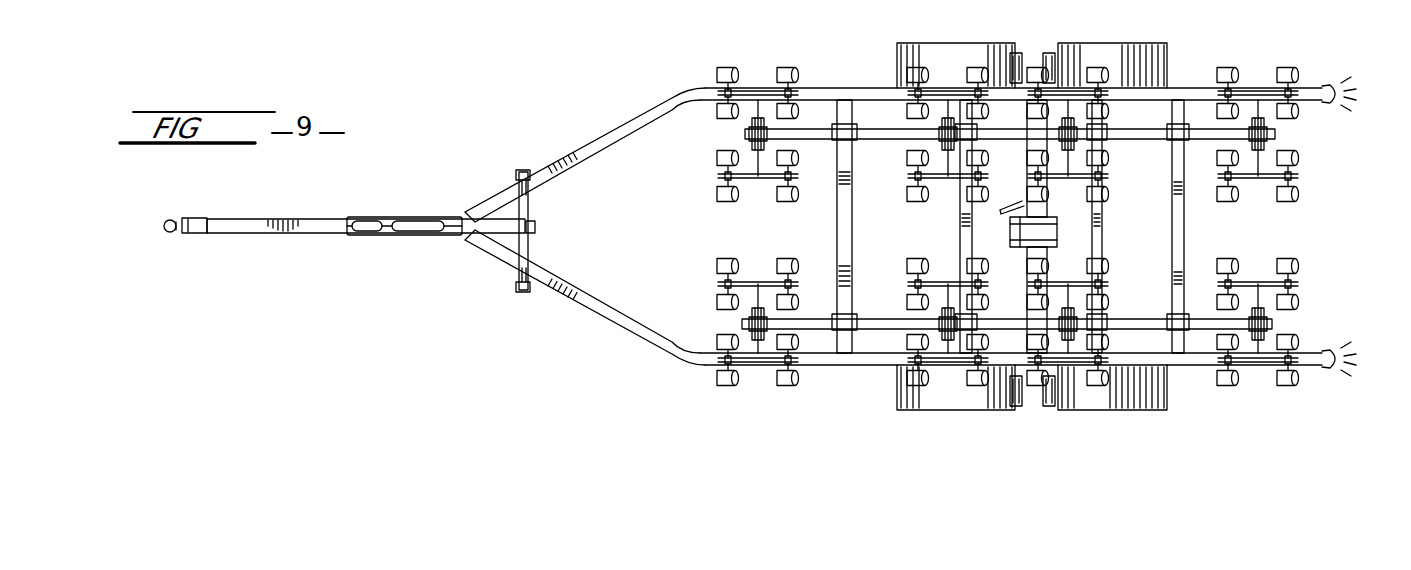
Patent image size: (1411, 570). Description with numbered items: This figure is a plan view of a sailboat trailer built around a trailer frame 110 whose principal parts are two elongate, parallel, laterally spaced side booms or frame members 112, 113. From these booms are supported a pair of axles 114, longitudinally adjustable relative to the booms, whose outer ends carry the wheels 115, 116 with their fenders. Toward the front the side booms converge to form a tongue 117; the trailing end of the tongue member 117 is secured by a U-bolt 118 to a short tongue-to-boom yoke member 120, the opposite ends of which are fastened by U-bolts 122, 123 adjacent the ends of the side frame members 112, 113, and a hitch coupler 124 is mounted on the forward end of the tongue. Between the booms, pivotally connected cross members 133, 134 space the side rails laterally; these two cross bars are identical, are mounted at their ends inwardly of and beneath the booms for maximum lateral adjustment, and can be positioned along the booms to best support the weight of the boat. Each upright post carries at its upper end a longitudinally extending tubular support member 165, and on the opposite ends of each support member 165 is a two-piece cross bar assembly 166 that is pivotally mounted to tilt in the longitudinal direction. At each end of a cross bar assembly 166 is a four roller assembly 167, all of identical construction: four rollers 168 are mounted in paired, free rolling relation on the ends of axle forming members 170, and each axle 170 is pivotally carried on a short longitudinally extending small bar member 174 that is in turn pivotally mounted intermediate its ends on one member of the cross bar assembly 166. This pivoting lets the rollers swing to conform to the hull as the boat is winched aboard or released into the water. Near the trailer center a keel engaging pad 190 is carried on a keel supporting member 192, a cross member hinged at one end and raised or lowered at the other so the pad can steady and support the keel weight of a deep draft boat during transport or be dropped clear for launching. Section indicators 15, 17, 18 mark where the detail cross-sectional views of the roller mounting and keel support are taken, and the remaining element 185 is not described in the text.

The trailer frame 110 is at (652, 98).
The side boom or frame member 112 is at (824, 366).
The side boom or frame member 113 is at (812, 91).
The axle 114 is at (960, 226).
The wheel 115 is at (1093, 402).
The wheel 116 is at (1052, 33).
The tongue member 117 is at (322, 236).
The U-bolt 118 is at (535, 224).
The tongue-to-boom yoke member 120 is at (531, 241).
The U-bolt 122 is at (530, 268).
The U-bolt 123 is at (530, 184).
The hitch coupler 124 is at (184, 238).
The cross member 133 is at (837, 246).
The cross member 134 is at (1172, 218).
The support member 165 is at (888, 140).
The two-piece cross bar assembly 166 is at (740, 322).
The four roller assembly 167 is at (825, 37).
The roller 168 is at (1300, 198).
The axle forming member 170 is at (1295, 292).
The small bar member 174 is at (1256, 282).
The lower hitch bar 185 is at (1028, 328).
The keel engaging pad 190 is at (1050, 233).
The keel supporting member 192 is at (1033, 203).
The section line 15- 15 is at (1335, 328).
The section line 17- 17 is at (1250, 250).
The section line 18- 18 is at (1080, 40).